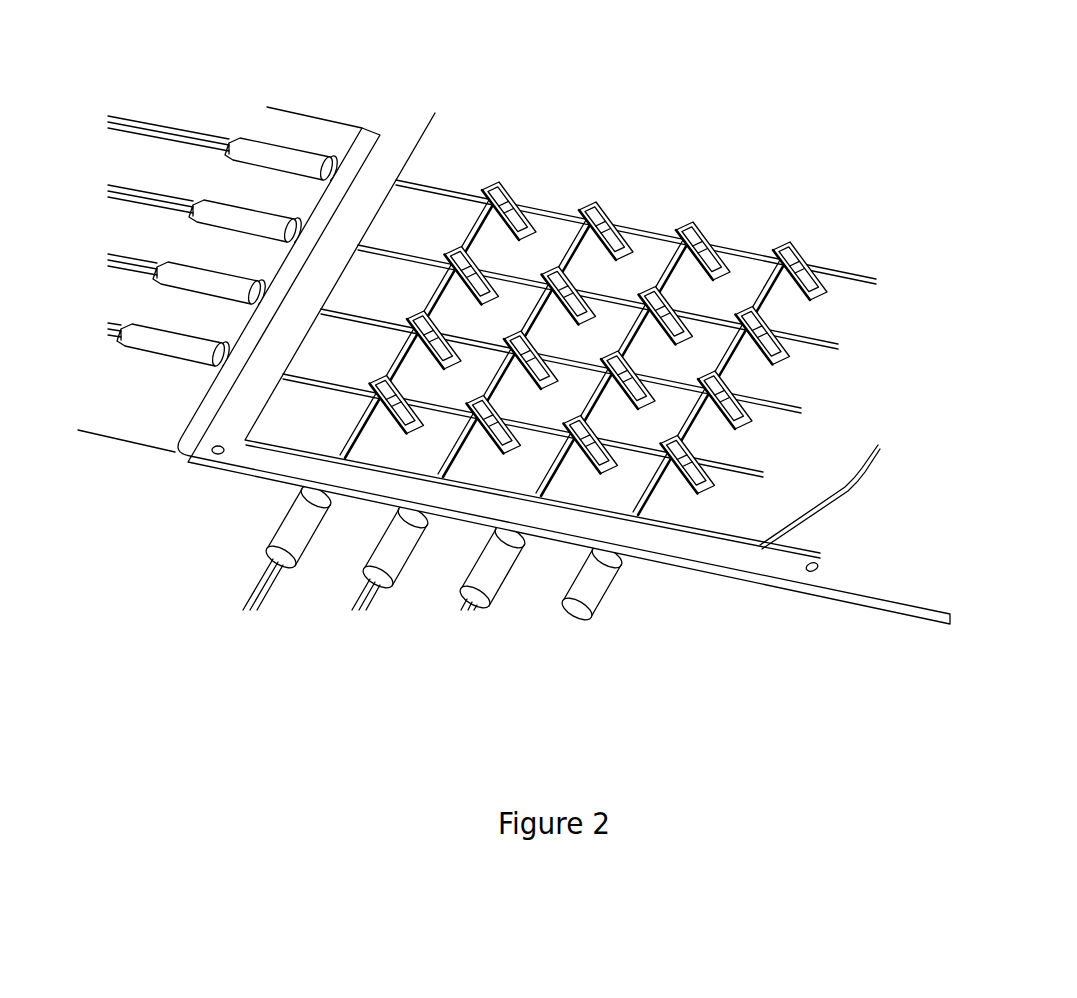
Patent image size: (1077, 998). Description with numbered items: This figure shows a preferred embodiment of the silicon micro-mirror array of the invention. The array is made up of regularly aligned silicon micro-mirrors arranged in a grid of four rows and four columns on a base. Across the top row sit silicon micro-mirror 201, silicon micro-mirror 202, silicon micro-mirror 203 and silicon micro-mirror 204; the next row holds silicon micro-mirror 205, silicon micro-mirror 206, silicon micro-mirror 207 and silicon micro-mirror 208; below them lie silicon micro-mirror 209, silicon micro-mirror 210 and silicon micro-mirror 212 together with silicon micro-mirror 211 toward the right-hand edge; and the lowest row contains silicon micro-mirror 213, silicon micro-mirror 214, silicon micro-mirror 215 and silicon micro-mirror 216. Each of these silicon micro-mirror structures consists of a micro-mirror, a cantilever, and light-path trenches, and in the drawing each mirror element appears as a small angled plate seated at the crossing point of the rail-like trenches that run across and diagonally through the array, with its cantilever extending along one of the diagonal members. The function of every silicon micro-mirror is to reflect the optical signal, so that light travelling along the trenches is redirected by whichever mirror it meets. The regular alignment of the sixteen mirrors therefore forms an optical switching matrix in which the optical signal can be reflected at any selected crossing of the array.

The silicon micro-mirror 201 is at (498, 187).
The silicon micro-mirror 202 is at (593, 207).
The silicon micro-mirror 203 is at (698, 228).
The silicon micro-mirror 204 is at (787, 250).
The silicon micro-mirror 205 is at (460, 252).
The silicon micro-mirror 206 is at (557, 272).
The silicon micro-mirror 207 is at (647, 292).
The silicon micro-mirror 208 is at (807, 333).
The silicon micro-mirror 209 is at (408, 346).
The silicon micro-mirror 210 is at (547, 390).
The silicon micro-mirror 211 is at (822, 555).
The silicon micro-mirror 212 is at (750, 417).
The silicon micro-mirror 213 is at (405, 430).
The silicon micro-mirror 214 is at (492, 445).
The silicon micro-mirror 215 is at (607, 473).
The silicon micro-mirror 216 is at (707, 497).